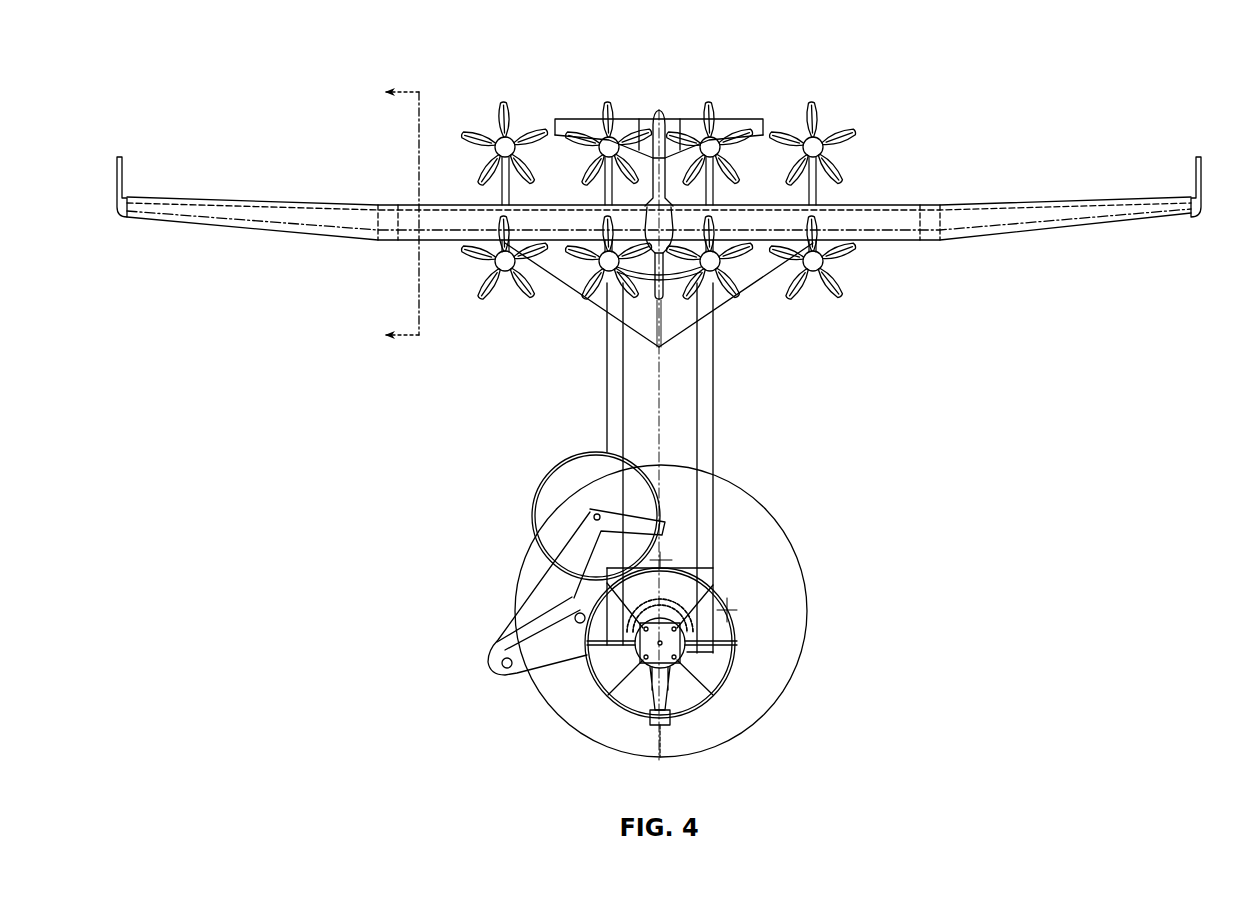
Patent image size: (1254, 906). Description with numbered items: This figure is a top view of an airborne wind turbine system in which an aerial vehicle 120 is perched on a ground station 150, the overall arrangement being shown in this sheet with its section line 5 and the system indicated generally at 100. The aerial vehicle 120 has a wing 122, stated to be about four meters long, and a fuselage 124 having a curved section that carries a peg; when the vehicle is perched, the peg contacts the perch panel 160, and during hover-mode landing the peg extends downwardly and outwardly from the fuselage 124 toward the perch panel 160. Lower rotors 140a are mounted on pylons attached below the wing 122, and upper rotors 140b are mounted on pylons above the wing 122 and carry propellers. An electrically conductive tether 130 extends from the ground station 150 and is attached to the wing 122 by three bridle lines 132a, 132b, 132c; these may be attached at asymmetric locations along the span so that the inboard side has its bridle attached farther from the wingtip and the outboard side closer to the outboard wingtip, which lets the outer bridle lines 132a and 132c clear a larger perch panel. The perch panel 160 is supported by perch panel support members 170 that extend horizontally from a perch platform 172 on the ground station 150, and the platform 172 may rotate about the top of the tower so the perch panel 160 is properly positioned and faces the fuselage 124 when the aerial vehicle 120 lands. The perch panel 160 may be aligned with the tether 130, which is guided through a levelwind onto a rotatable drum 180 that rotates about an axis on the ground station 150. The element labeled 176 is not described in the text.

The section line 5- 5 is at (388, 214).
The aircraft 100 is at (1050, 400).
The aerial vehicle 120 is at (917, 138).
The wing 122 is at (888, 222).
The fuselage 124 is at (656, 150).
The fuselage 176 is at (680, 265).
The lower rotors 140a is at (505, 272).
The upper rotors 140b is at (510, 139).
The bridle line 132a is at (568, 283).
The bridle line 132b is at (663, 321).
The bridle line 132c is at (750, 284).
The perch panel support members 170 is at (706, 390).
The perch platform 172 is at (612, 382).
The tether 130 is at (660, 412).
The ground station 150 is at (947, 678).
The perch panel 160 is at (552, 468).
The rotatable drum 180 is at (727, 680).